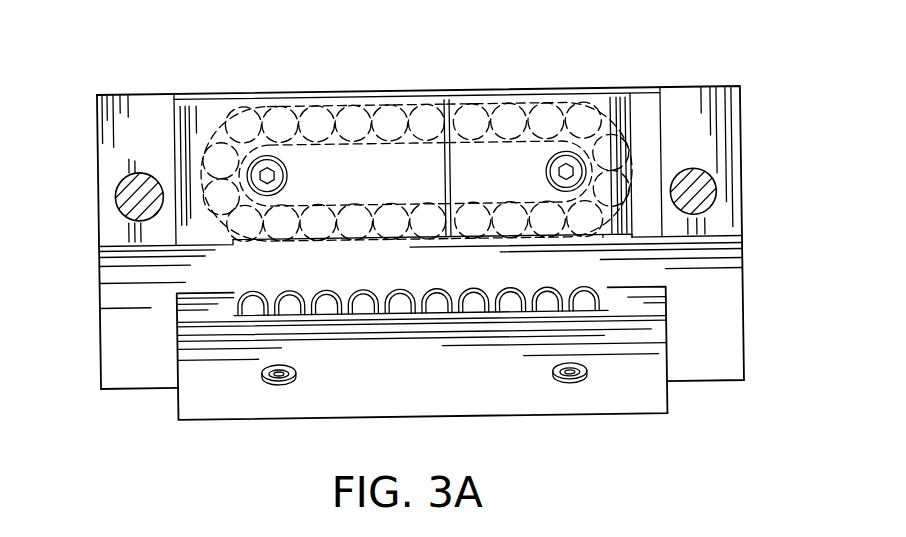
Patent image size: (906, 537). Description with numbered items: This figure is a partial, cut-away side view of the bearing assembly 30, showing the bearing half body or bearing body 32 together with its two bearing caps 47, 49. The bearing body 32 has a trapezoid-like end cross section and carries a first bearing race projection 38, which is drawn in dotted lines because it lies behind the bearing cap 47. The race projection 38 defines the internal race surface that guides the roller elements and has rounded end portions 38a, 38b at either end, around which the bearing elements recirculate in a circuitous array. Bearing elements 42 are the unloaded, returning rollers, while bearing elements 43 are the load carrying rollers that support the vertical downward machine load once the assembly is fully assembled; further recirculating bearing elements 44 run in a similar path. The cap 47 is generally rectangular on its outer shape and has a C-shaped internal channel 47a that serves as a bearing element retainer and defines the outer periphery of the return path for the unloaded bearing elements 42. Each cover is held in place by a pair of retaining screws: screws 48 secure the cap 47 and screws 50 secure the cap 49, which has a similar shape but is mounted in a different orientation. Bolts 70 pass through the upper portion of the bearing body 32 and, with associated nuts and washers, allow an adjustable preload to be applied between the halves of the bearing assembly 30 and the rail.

The bearing assembly 30 is at (696, 74).
The bearing body 32 is at (124, 363).
The first bearing race projection 38 is at (399, 186).
The rounded end portion 38a is at (275, 108).
The rounded end portion 38b is at (567, 125).
The bearing elements 42 is at (430, 120).
The bearing elements 43 is at (371, 239).
The bearing elements 44 is at (456, 268).
The bearing cap 47 is at (632, 233).
The internal channel 47a is at (222, 125).
The retaining screws 48 is at (289, 174).
The bearing cap 49 is at (465, 380).
The retaining screws 50 is at (273, 382).
The bolts 70 is at (132, 191).